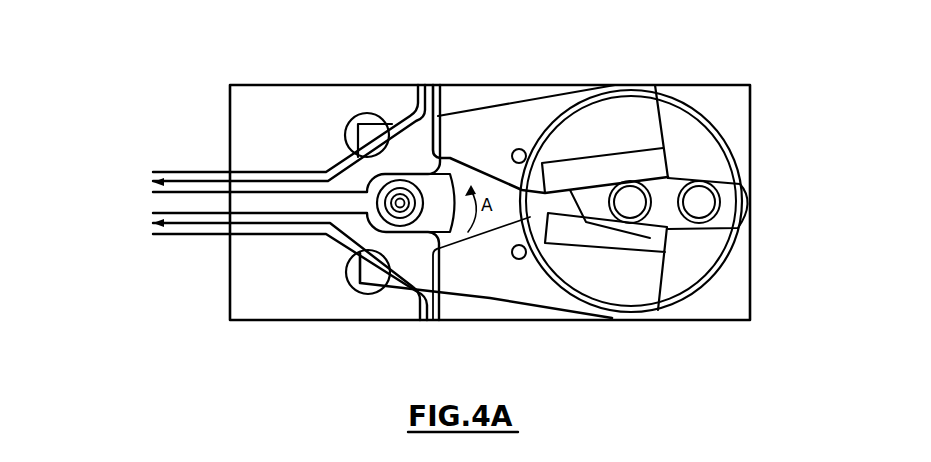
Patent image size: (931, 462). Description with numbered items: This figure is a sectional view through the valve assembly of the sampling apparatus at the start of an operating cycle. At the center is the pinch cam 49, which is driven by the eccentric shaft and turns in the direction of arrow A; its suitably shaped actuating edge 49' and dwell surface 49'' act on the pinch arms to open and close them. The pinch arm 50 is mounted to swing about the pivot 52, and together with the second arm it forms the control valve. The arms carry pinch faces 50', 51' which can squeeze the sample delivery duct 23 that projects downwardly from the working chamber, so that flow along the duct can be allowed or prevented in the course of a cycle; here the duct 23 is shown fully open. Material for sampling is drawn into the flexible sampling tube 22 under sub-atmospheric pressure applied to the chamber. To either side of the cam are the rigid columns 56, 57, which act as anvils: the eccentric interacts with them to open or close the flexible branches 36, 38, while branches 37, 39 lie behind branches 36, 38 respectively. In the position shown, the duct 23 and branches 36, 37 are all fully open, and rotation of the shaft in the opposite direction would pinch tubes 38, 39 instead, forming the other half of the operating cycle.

The flexible sampling tube 22 is at (716, 190).
The sample delivery duct 23 is at (651, 213).
The flexible branch 36 is at (160, 182).
The flexible branch 37 is at (160, 182).
The flexible branch 38 is at (160, 223).
The flexible branch 39 is at (160, 223).
The pinch cam 49 is at (424, 268).
The actuating edge 49' is at (361, 298).
The dwell surface 49'' is at (495, 143).
The pinch arm 50 is at (631, 226).
The pinch face 50' is at (671, 152).
The pinch face 51' is at (673, 250).
The pivot 52 is at (517, 262).
The rigid column 56 is at (370, 296).
The rigid column 57 is at (365, 114).